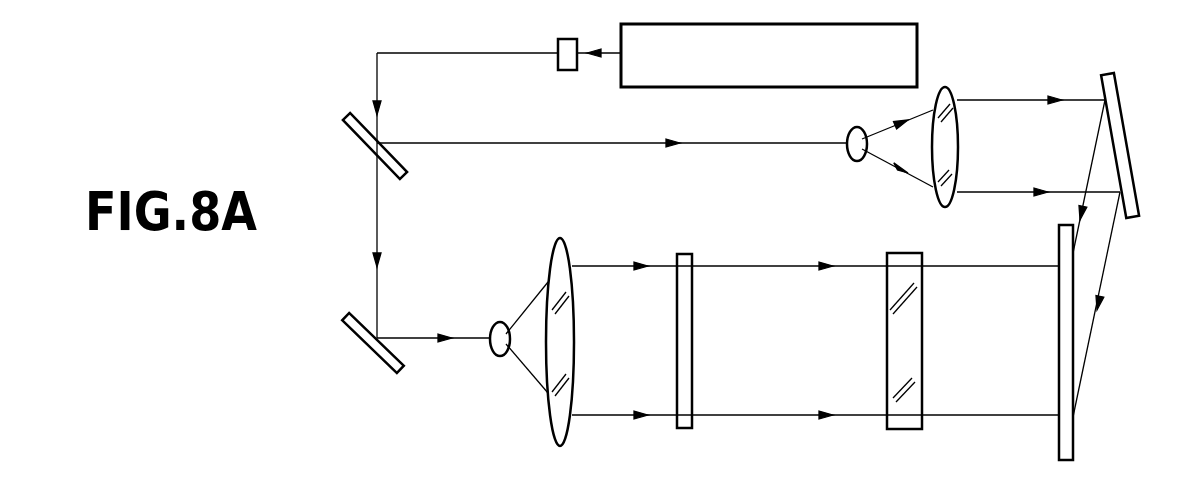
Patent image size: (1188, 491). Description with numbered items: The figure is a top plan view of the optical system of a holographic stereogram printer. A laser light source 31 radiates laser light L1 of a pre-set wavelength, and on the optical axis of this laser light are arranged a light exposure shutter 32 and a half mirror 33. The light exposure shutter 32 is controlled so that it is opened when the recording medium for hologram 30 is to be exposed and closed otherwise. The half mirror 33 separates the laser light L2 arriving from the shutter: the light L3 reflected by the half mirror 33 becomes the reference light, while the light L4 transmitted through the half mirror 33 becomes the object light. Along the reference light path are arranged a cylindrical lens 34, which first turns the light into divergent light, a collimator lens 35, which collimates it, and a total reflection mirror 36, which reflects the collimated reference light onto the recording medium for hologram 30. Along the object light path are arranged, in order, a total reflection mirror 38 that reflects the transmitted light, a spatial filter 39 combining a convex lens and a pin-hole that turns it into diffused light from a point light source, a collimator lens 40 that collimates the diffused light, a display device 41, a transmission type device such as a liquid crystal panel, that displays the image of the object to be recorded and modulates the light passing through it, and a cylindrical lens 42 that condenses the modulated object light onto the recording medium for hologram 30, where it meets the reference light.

The recording medium for hologram 30 is at (1059, 234).
The laser light source 31 is at (693, 87).
The light exposure shutter 32 is at (565, 70).
The half mirror 33 is at (356, 130).
The cylindrical lens 34 is at (855, 140).
The collimator lens 35 is at (945, 95).
The total reflection mirror 36 is at (1120, 125).
The total reflection mirror 38 is at (352, 330).
The spatial filter 39 is at (497, 334).
The collimator lens 40 is at (556, 243).
The display device 41 is at (685, 258).
The cylindrical lens 42 is at (903, 260).
The laser light L1 is at (601, 58).
The laser light L2 is at (377, 75).
The reference light L3 is at (482, 145).
The object light L4 is at (378, 222).